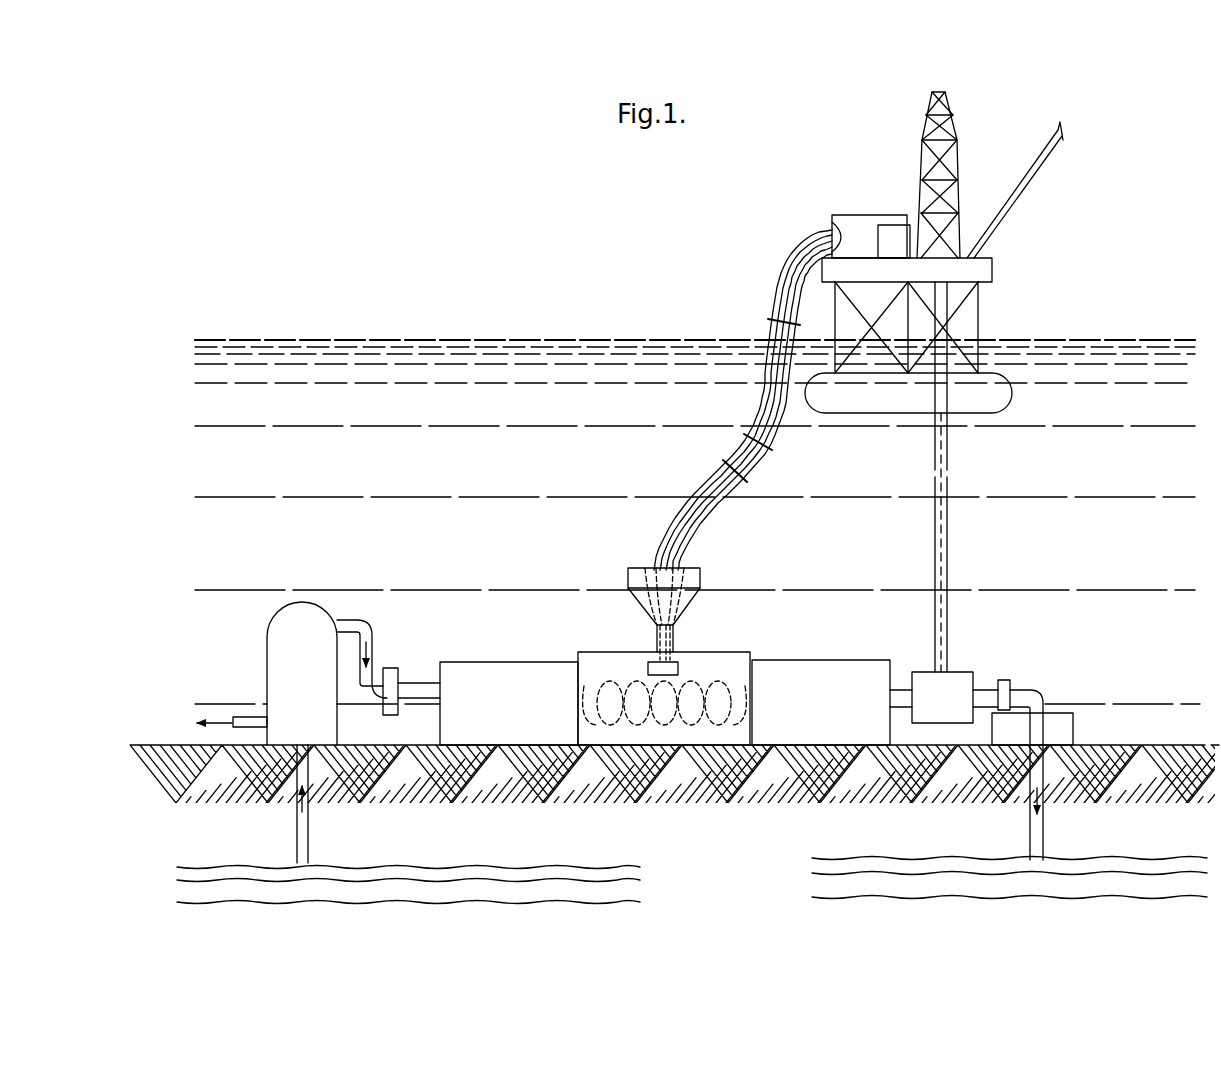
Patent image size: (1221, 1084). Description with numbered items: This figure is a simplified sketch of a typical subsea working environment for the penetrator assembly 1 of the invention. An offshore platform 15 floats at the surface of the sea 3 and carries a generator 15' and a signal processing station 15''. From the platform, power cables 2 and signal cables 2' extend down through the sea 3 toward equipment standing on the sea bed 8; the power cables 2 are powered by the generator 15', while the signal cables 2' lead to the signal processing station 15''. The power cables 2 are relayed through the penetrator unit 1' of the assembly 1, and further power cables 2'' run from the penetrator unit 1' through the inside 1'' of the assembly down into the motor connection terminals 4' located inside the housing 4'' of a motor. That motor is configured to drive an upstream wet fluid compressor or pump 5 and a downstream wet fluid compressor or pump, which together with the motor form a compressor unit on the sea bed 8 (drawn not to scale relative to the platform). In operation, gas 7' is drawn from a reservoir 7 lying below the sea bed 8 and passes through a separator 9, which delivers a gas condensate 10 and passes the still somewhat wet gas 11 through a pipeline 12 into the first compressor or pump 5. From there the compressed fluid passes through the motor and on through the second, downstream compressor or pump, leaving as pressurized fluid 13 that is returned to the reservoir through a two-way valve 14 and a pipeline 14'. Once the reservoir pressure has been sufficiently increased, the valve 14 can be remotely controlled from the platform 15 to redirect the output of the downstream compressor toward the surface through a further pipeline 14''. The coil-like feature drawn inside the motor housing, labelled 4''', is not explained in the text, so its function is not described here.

The penetrator assembly 1 is at (754, 540).
The penetrator unit 1' is at (638, 569).
The inside of the assembly 1'' is at (684, 620).
The power cables 2 is at (743, 398).
The signal cables 2' is at (717, 363).
The further power cables 2'' is at (634, 614).
The sea 3 is at (1133, 339).
The motor connection terminals 4' is at (692, 645).
The housing of the motor 4'' is at (687, 676).
The heating coil 4''' is at (665, 760).
The upstream wet fluid compressor or pump 5 is at (518, 716).
The reservoir 7 is at (408, 856).
The gas 7' is at (1009, 856).
The sea bed 8 is at (1136, 757).
The separator 9 is at (283, 652).
The gas condensate 10 is at (215, 720).
The gas 11 is at (365, 652).
The pipeline 12 is at (420, 690).
The pressurized fluid 13 is at (1030, 800).
The two-way valve 14 is at (953, 673).
The pipeline 14' is at (1048, 693).
The pipeline 14'' is at (986, 542).
The offshore platform 15 is at (934, 281).
The generator 15' is at (869, 202).
The signal processing station 15'' is at (889, 211).